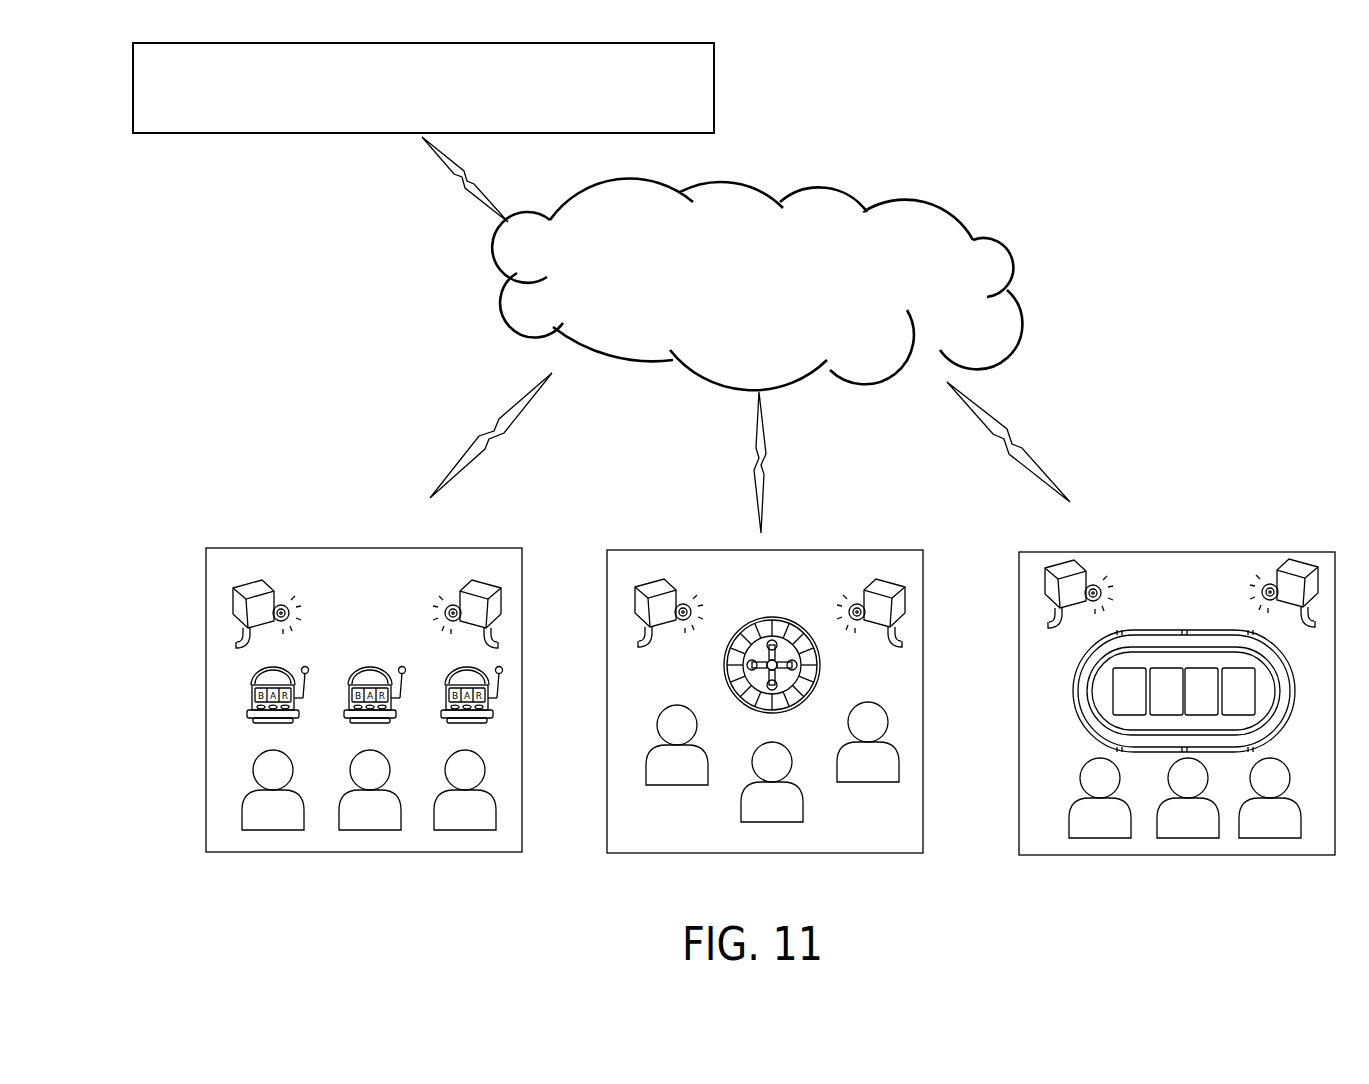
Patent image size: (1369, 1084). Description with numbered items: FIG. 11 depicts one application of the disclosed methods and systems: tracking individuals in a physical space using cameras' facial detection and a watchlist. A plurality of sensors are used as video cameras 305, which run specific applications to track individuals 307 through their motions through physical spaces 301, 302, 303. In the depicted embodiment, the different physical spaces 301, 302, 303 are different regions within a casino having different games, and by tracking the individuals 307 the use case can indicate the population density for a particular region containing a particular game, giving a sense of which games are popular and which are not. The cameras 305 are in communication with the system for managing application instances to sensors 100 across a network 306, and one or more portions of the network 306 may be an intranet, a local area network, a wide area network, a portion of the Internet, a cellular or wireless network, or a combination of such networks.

The system for managing application instances to sensors 100 is at (668, 113).
The network 306 is at (497, 260).
The video cameras 305 is at (237, 595).
The physical space 301 is at (243, 687).
The individuals 307 is at (242, 805).
The physical space 302 is at (718, 675).
The physical space 303 is at (1072, 683).